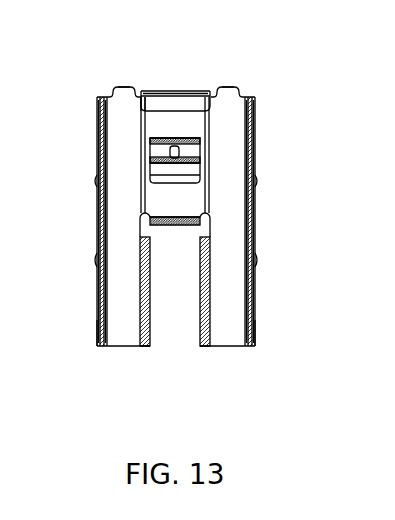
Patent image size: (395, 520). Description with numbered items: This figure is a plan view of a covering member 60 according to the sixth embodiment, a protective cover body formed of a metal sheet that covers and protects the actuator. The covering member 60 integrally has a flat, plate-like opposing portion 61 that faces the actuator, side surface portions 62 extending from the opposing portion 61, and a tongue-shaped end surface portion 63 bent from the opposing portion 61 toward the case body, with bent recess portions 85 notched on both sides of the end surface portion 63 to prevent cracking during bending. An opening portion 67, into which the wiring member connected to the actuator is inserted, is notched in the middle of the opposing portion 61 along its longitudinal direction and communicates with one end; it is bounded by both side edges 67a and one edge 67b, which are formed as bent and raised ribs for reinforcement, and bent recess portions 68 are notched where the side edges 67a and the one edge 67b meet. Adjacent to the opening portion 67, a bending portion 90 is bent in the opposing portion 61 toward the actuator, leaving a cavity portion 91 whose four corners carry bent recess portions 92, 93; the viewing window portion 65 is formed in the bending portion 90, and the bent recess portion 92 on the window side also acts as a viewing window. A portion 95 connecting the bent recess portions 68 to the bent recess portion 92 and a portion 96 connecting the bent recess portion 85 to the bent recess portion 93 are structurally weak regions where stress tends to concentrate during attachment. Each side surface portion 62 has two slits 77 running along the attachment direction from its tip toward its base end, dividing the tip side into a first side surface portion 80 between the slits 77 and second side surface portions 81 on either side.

The covering member 60 is at (274, 59).
The opposing portion 61 is at (225, 140).
The side surface portion 62 is at (97, 331).
The end surface portion 63 is at (155, 90).
The viewing window portion 65 is at (201, 163).
The opening portion 67 is at (175, 347).
The side edge 67a is at (146, 335).
The one edge 67b is at (165, 215).
The bent recess portion 68 is at (208, 230).
The slit 77 is at (96, 181).
The first side surface portion 80 is at (97, 217).
The second side surface portion 81 is at (97, 112).
The bent recess portion 85 is at (137, 90).
The bending portion 90 is at (200, 138).
The cavity portion 91 is at (145, 128).
The bent recess portion 92 is at (168, 177).
The bent recess portion 93 is at (140, 117).
The portion 95 is at (183, 90).
The portion 96 is at (141, 200).